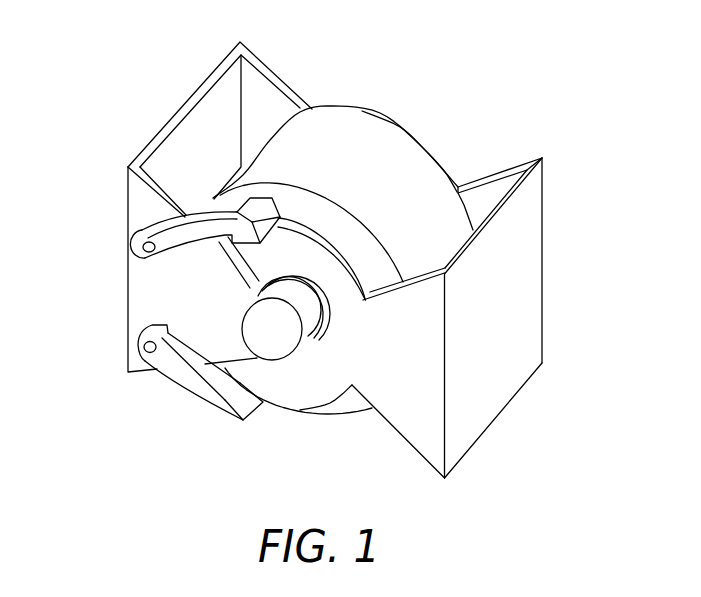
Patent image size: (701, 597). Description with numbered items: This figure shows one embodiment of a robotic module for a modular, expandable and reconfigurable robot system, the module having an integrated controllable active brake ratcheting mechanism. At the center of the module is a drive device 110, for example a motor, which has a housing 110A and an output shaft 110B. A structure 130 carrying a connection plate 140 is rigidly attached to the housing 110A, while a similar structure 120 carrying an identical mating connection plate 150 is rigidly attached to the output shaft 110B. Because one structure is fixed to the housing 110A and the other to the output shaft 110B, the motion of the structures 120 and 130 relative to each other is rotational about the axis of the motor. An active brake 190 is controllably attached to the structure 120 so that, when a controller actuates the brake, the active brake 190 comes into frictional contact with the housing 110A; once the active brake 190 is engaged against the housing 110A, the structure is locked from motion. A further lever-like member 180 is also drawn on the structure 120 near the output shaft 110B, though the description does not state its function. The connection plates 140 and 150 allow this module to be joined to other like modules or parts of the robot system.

The drive device 110 is at (367, 140).
The housing 110A is at (433, 143).
The output shaft 110B is at (283, 333).
The structure 120 is at (147, 293).
The structure 130 is at (432, 433).
The connection plate 140 is at (530, 272).
The mating connection plate 150 is at (227, 102).
The lower lever 180 is at (203, 393).
The active brake 190 is at (207, 232).